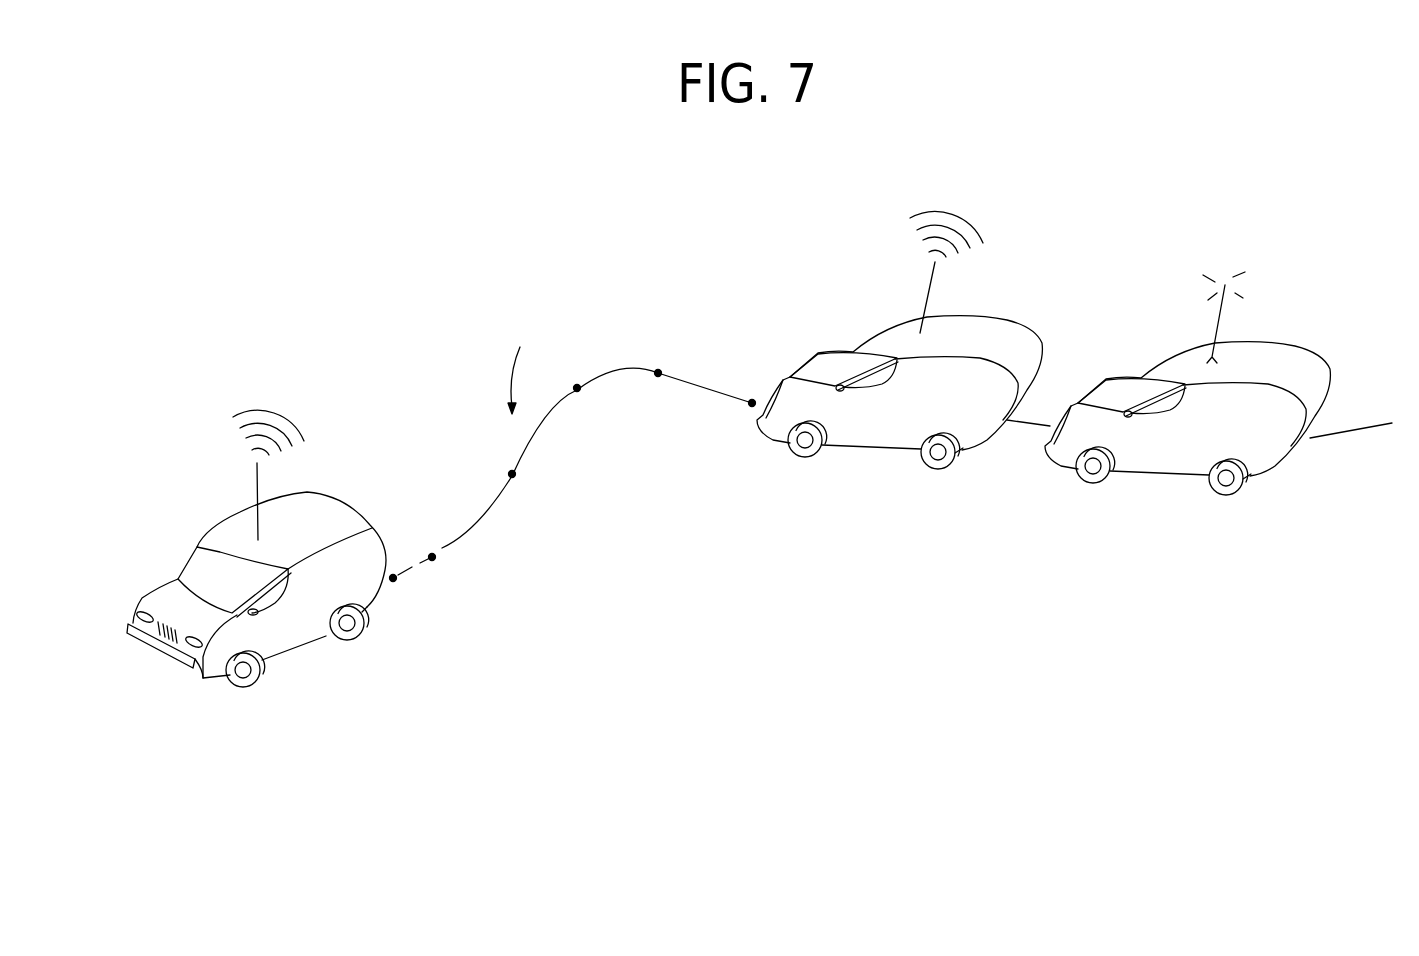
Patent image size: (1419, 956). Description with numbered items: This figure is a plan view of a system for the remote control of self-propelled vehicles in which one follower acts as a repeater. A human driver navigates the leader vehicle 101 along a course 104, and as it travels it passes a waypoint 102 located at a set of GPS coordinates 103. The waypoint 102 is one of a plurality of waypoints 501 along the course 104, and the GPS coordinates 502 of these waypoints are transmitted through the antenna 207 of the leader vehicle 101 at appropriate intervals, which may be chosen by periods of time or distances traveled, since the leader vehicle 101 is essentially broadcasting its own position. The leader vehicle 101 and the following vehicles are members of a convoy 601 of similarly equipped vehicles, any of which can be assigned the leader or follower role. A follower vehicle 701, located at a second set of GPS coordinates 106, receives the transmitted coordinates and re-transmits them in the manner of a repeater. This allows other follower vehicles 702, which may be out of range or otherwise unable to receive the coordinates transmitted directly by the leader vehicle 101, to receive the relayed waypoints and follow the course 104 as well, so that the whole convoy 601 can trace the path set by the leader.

The leader vehicle 101 is at (182, 665).
The waypoint 102 is at (426, 598).
The set of GPS coordinates 103 is at (396, 582).
The course 104 is at (525, 363).
The second set of GPS coordinates 106 is at (750, 407).
The antenna 207 is at (247, 475).
The plurality of waypoints 501 is at (591, 460).
The GPS coordinates 502 is at (591, 460).
The convoy 601 is at (1023, 530).
The follower vehicle 701 is at (978, 317).
The other follower vehicles 702 is at (1268, 342).